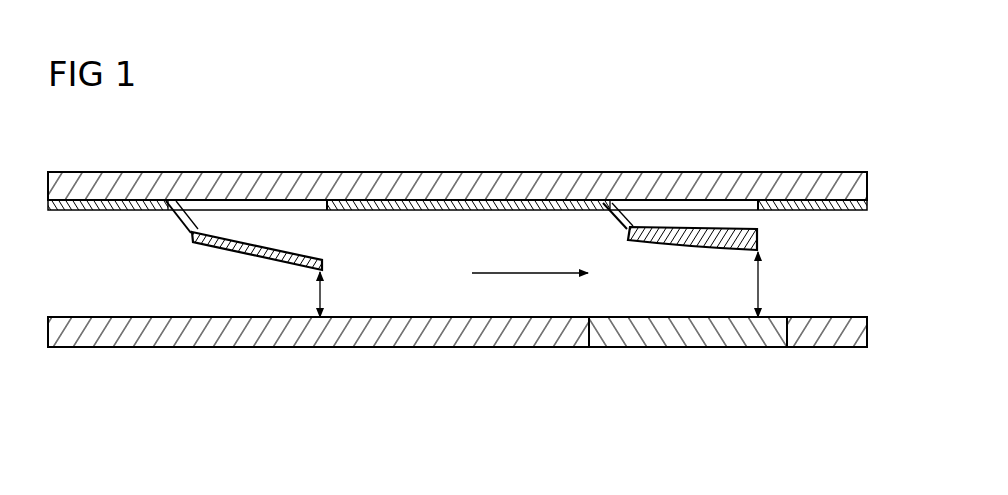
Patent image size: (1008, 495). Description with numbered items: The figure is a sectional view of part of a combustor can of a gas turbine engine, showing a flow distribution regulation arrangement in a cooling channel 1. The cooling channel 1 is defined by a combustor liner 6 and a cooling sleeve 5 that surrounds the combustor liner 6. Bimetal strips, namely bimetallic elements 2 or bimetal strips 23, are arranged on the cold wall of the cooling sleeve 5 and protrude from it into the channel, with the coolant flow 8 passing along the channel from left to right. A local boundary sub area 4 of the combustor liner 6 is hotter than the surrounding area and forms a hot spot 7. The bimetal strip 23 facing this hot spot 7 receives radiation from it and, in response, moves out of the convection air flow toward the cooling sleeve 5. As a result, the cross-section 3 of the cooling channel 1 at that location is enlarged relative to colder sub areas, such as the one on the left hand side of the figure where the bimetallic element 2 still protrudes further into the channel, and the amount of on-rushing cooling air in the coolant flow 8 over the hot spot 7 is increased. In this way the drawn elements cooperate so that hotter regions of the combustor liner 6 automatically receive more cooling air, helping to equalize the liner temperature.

The cooling channel 1 is at (90, 268).
The bimetallic element 2 is at (326, 263).
The bimetal strip 23 is at (760, 238).
The cross-section 3 is at (322, 300).
The local boundary sub area 4 is at (688, 332).
The cooling sleeve 5 is at (200, 192).
The combustor liner 6 is at (210, 330).
The hot spot 7 is at (688, 332).
The coolant flow 8 is at (514, 272).